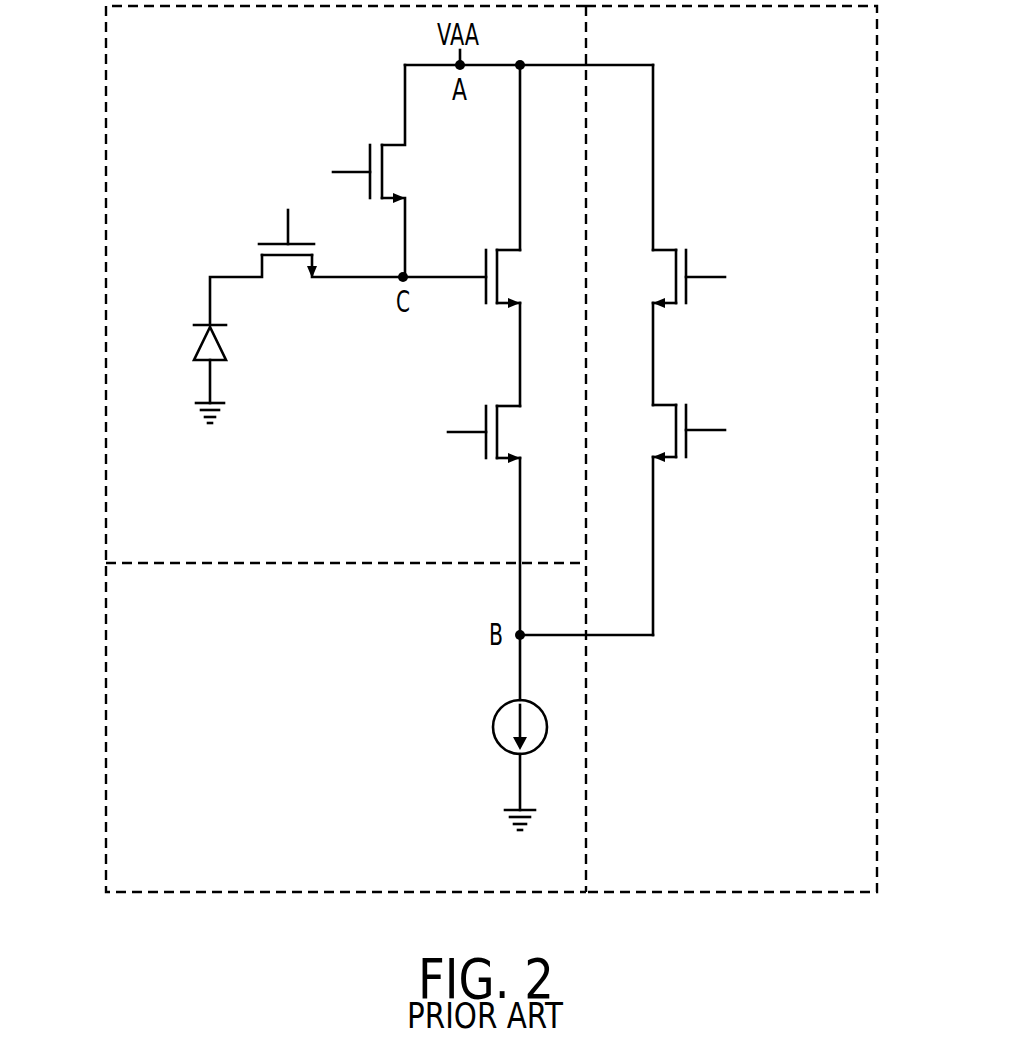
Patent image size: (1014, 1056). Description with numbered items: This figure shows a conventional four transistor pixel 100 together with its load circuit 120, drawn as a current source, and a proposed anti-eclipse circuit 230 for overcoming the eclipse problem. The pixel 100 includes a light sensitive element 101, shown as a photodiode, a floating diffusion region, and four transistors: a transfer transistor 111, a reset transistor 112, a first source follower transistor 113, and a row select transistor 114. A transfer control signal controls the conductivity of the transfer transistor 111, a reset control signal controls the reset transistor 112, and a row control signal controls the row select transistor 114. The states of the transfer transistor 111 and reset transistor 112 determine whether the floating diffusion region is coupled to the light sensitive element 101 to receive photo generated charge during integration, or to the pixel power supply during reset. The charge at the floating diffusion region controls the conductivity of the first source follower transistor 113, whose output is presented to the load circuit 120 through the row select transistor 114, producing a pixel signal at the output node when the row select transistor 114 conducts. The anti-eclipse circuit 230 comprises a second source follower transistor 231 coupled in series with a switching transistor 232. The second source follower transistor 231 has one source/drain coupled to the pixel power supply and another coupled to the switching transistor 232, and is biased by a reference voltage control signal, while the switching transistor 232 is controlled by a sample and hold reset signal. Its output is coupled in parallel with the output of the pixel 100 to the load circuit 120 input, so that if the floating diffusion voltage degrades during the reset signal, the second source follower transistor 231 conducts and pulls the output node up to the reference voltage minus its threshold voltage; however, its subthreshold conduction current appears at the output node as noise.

The pixel 100 is at (103, 130).
The light sensitive element 101 is at (208, 348).
The transfer transistor 111 is at (261, 259).
The reset transistor 112 is at (385, 143).
The first source follower transistor 113 is at (500, 248).
The row select transistor 114 is at (500, 405).
The load circuit 120 is at (494, 738).
The anti-eclipse circuit 230 is at (880, 160).
The second source follower transistor 231 is at (668, 248).
The switching transistor 232 is at (668, 405).